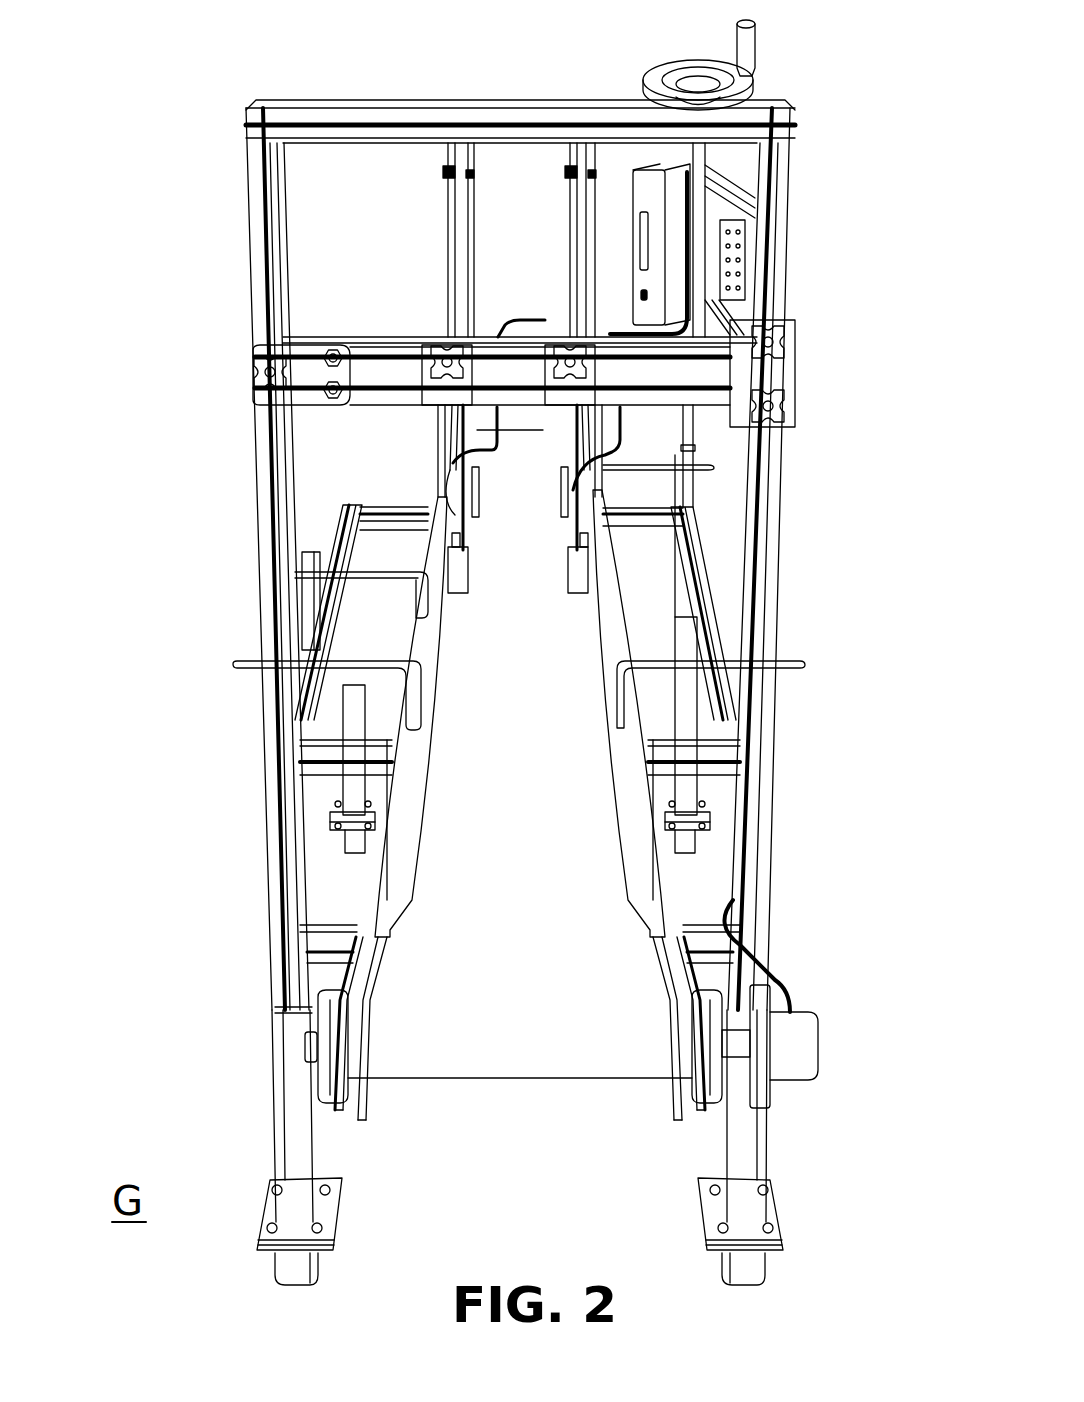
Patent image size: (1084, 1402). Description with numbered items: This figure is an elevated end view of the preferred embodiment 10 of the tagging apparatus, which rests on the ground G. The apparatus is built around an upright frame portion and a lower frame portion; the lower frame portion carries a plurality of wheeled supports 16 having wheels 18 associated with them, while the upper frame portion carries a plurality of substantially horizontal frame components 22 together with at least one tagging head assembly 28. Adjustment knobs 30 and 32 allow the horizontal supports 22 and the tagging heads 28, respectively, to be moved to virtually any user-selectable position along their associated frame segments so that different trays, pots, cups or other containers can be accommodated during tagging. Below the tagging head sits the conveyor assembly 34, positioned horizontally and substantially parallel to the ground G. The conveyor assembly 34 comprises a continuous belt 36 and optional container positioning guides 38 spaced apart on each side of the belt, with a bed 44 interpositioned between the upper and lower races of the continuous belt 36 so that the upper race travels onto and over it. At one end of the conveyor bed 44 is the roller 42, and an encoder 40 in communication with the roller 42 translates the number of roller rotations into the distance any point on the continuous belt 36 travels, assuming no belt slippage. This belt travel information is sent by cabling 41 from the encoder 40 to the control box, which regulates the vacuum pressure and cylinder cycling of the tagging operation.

The preferred embodiment 10 is at (483, 624).
The wheeled supports 16 is at (828, 1183).
The wheels 18 is at (840, 1232).
The horizontal frame components 22 is at (607, 476).
The tagging head assembly 28 is at (778, 214).
The adjustment knob 30 is at (844, 412).
The adjustment knob 32 is at (262, 303).
The conveyor assembly 34 is at (520, 1142).
The continuous belt 36 is at (776, 805).
The container positioning guides 38 is at (266, 717).
The encoder 40 is at (854, 1041).
The cabling 41 is at (841, 953).
The roller 42 is at (218, 1012).
The bed 44 is at (236, 977).